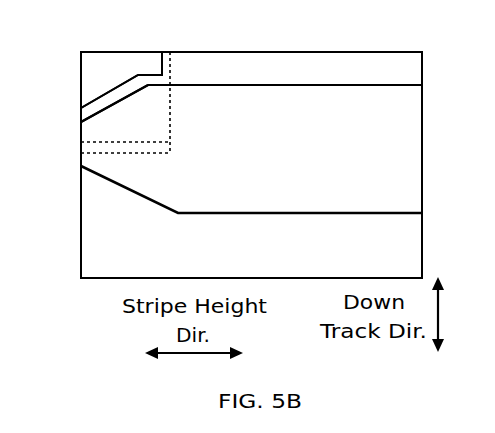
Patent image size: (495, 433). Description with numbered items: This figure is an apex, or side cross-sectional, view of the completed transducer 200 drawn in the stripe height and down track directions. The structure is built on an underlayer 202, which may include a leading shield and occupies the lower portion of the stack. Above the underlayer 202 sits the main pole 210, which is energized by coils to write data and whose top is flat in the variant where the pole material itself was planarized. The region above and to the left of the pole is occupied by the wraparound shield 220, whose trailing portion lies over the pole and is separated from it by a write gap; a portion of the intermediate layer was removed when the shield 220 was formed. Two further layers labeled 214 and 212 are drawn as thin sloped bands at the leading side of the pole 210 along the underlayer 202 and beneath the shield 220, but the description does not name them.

The transducer 200 is at (323, 20).
The wraparound shield 220 is at (129, 52).
The side/nonmagnetic gap layer 214 is at (92, 92).
The pole bottom bevel / seed layer 212 is at (96, 192).
The main pole 210 is at (251, 149).
The underlayer 202 is at (251, 245).